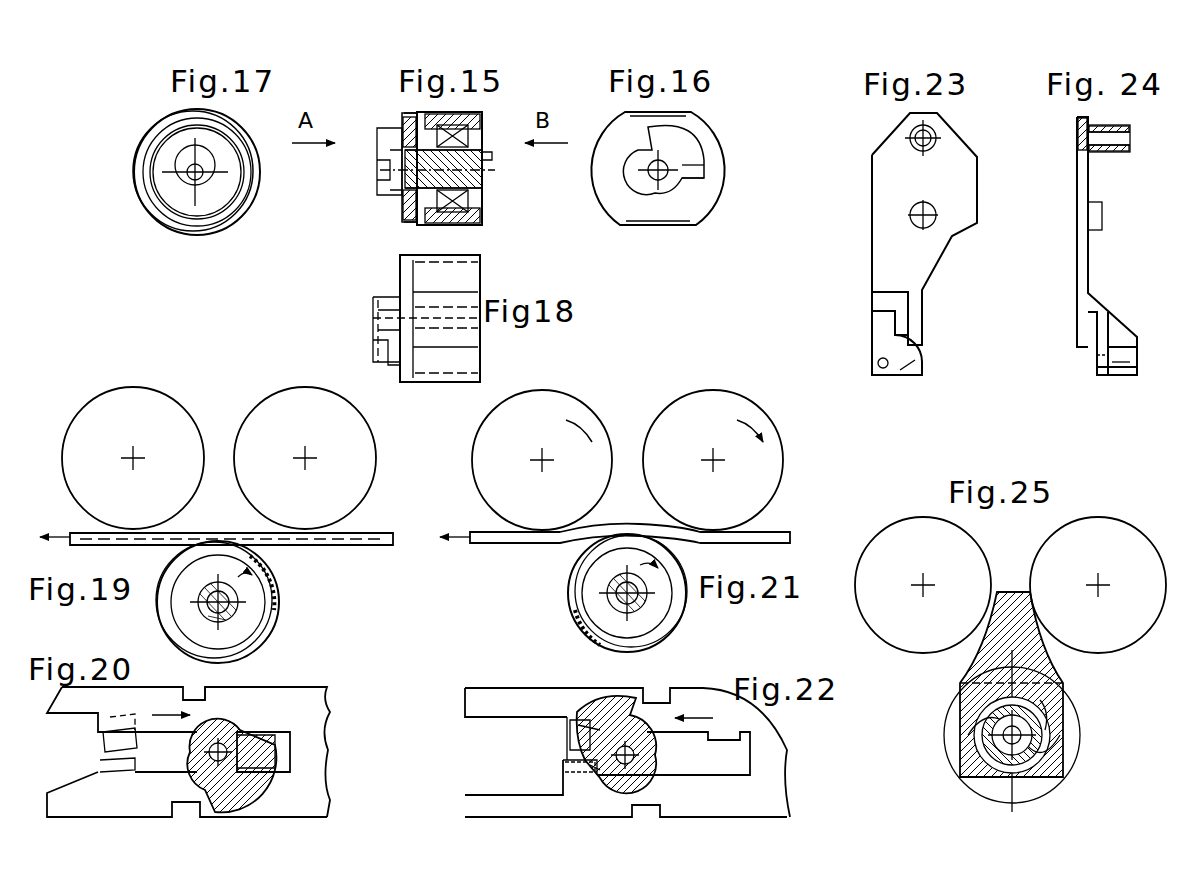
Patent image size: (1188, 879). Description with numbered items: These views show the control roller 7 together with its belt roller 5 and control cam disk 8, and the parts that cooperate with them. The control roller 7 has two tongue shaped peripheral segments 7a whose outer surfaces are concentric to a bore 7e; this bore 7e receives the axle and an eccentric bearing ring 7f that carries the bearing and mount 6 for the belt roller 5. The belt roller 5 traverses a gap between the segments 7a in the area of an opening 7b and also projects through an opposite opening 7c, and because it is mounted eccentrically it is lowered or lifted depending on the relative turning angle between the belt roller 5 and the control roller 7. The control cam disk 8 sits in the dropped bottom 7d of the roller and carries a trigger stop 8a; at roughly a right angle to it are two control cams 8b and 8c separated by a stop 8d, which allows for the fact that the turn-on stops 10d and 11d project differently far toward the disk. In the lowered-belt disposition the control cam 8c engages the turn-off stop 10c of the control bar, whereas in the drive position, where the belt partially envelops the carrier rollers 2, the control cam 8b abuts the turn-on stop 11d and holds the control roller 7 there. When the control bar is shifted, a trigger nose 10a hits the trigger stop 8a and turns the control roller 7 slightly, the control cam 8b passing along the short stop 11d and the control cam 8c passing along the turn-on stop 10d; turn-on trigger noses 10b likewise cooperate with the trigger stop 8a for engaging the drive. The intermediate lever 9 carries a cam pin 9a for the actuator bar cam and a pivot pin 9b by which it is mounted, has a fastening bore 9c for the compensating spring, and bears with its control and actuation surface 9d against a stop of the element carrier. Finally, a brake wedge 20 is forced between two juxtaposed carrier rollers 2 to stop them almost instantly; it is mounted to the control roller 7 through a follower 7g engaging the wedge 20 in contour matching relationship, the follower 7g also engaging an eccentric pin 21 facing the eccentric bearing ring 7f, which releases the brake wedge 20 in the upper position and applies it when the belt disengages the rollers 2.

In FIG. 19, the carrier roller 2 is at (346, 492).
In FIG. 21, the carrier roller 2 is at (502, 520).
In FIG. 25, the carrier roller 2 is at (1045, 565).
In FIG. 17, the belt roller 5 is at (178, 192).
In FIG. 15, the belt roller 5 is at (425, 222).
In FIG. 19, the belt roller 5 is at (255, 613).
In FIG. 21, the belt roller 5 is at (598, 573).
In FIG. 15, the bearing and mount 6 is at (466, 206).
In FIG. 25, the control roller 7 is at (1078, 752).
In FIG. 17, the tongue shaped peripheral segment 7a is at (140, 197).
In FIG. 19, the tongue shaped peripheral segment 7a is at (280, 592).
In FIG. 21, the tongue shaped peripheral segment 7a is at (578, 617).
In FIG. 17, the opening 7b is at (190, 113).
In FIG. 17, the opening 7c is at (191, 224).
In FIG. 15, the dropped bottom 7d is at (405, 218).
In FIG. 17, the bore 7e is at (190, 175).
In FIG. 15, the bore 7e is at (466, 172).
In FIG. 16, the bore 7e is at (648, 170).
In FIG. 25, the bore 7e is at (1040, 738).
In FIG. 17, the eccentric bearing ring 7f is at (190, 152).
In FIG. 15, the eccentric bearing ring 7f is at (483, 157).
In FIG. 25, the eccentric bearing ring 7f is at (1052, 718).
In FIG. 25, the follower 7g is at (1042, 704).
In FIG. 16, the control cam disk 8 is at (612, 196).
In FIG. 16, the trigger stop 8a is at (655, 138).
In FIG. 22, the trigger stop 8a is at (630, 706).
In FIG. 15, the control cam 8b is at (385, 166).
In FIG. 16, the control cam 8b is at (704, 168).
In FIG. 22, the control cam 8b is at (582, 738).
In FIG. 15, the control cam 8c is at (388, 196).
In FIG. 16, the control cam 8c is at (695, 182).
In FIG. 20, the control cam 8c is at (288, 760).
In FIG. 22, the control cam 8c is at (598, 768).
In FIG. 15, the stop 8d is at (380, 176).
In FIG. 23, the intermediate lever 9 is at (965, 178).
In FIG. 24, the intermediate lever 9 is at (1107, 246).
In FIG. 23, the cam pin 9a is at (934, 134).
In FIG. 24, the cam pin 9a is at (1128, 142).
In FIG. 23, the pivot pin 9b is at (933, 223).
In FIG. 24, the pivot pin 9b is at (1104, 222).
In FIG. 23, the fastening bore 9c is at (879, 361).
In FIG. 24, the fastening bore 9c is at (1097, 364).
In FIG. 23, the control and actuation surface 9d is at (905, 368).
In FIG. 24, the control and actuation surface 9d is at (1125, 372).
In FIG. 20, the trigger nose 10a is at (222, 692).
In FIG. 22, the trigger nose 10a is at (670, 695).
In FIG. 20, the turn-on trigger nose 10b is at (172, 812).
In FIG. 22, the turn-on trigger nose 10b is at (660, 812).
In FIG. 20, the turn-off stop 10c is at (286, 736).
In FIG. 22, the turn-on stop 10d is at (566, 773).
In FIG. 22, the turn-on stop 11d is at (578, 744).
In FIG. 25, the brake wedge 20 is at (992, 650).
In FIG. 25, the eccentric pin 21 is at (985, 732).